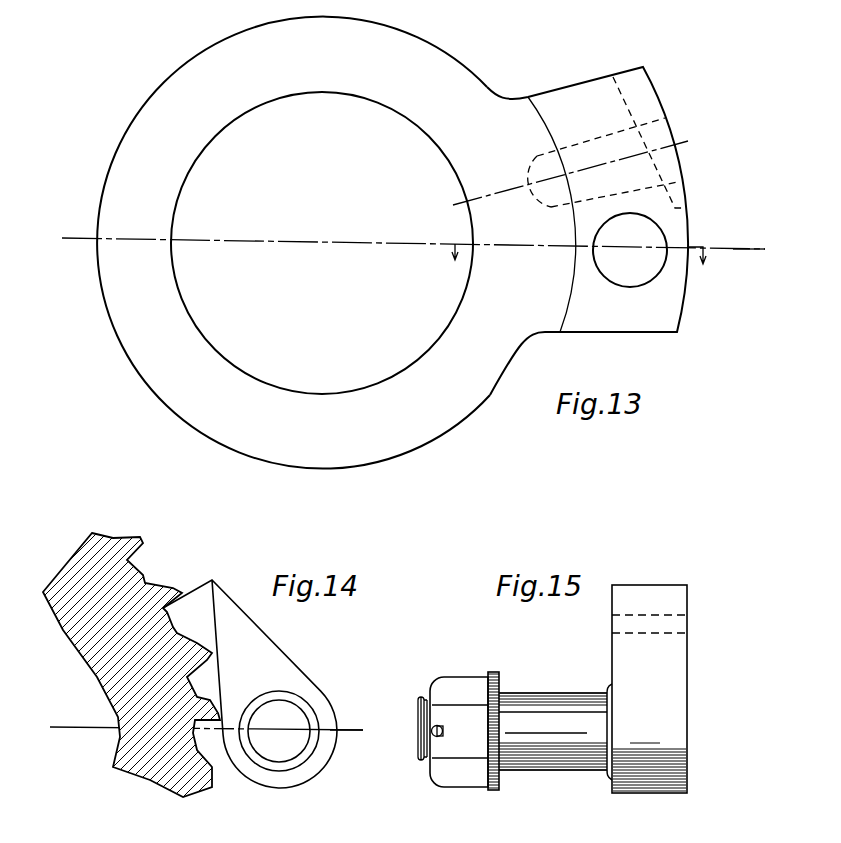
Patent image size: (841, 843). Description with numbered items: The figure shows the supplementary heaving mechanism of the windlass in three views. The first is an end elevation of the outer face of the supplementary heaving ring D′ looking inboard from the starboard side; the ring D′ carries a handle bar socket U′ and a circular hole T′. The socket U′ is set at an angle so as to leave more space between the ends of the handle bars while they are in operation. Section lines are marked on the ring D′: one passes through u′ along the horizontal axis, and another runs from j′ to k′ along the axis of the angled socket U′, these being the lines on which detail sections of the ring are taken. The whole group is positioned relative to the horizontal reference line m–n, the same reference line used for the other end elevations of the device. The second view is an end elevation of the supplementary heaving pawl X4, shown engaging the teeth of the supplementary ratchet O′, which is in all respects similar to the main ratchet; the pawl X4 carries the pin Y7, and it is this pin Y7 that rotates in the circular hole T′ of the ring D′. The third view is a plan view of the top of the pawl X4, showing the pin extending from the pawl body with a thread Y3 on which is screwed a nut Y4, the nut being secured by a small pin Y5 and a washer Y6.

In FIG. 13, the horizontal reference line m is at (413, 234).
In FIG. 14, the horizontal reference line m is at (206, 715).
In FIG. 13, the horizontal reference line n is at (749, 236).
In FIG. 14, the horizontal reference line n is at (346, 717).
In FIG. 13, the supplementary heaving ring D′ is at (293, 243).
In FIG. 13, the handle bar socket U′ is at (677, 182).
In FIG. 13, the circular hole T′ is at (630, 250).
In FIG. 13, the section line k′ is at (691, 133).
In FIG. 13, the section line j′ is at (454, 203).
In FIG. 13, the section line u′ is at (445, 246).
In FIG. 13, the center line indication at lug edge o′ is at (708, 249).
In FIG. 14, the supplementary ratchet O′ is at (173, 588).
In FIG. 14, the supplementary heaving pawl X4 is at (250, 684).
In FIG. 15, the supplementary heaving pawl X4 is at (649, 689).
In FIG. 14, the pin Y7 is at (290, 768).
In FIG. 15, the pin Y7 is at (551, 710).
In FIG. 15, the thread Y3 is at (418, 710).
In FIG. 15, the nut Y4 is at (460, 687).
In FIG. 15, the pin Y5 is at (430, 735).
In FIG. 15, the washer Y6 is at (493, 790).